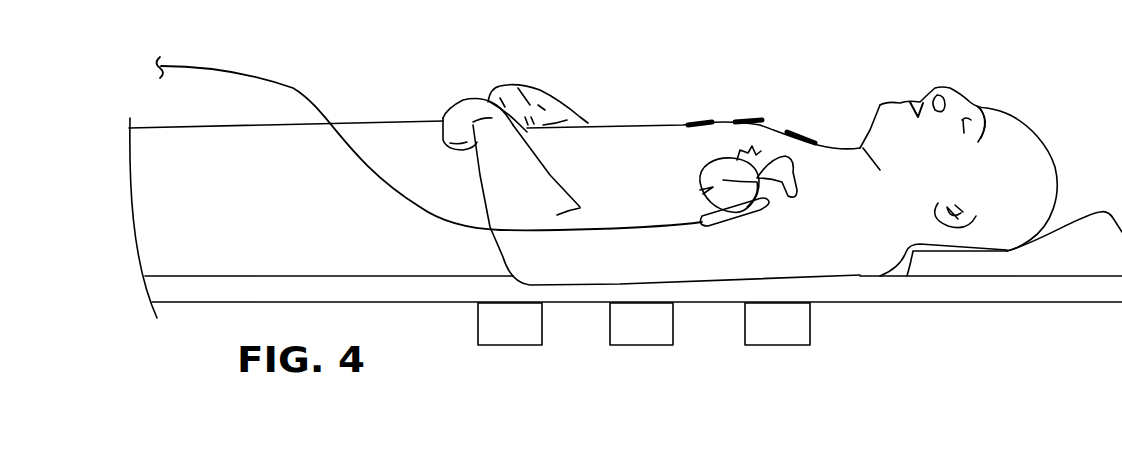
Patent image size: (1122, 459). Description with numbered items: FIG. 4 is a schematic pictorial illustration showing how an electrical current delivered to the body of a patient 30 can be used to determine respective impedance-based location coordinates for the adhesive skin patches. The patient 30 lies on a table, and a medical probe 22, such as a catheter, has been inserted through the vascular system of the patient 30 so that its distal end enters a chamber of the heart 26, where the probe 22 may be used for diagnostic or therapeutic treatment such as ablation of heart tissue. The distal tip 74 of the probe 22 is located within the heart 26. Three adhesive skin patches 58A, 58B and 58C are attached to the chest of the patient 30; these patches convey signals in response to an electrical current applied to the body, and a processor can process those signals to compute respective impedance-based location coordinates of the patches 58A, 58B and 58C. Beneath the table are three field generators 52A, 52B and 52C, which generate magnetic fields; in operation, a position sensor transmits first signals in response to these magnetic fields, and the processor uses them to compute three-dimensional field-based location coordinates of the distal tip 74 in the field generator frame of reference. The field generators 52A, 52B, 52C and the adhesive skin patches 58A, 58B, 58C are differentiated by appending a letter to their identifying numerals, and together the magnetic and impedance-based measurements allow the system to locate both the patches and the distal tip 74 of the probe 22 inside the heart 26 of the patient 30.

The medical probe 22 is at (293, 88).
The heart 26 is at (782, 195).
The patient 30 is at (1023, 147).
The field generator 52A is at (505, 346).
The field generator 52B is at (642, 346).
The field generator 52C is at (782, 346).
The adhesive skin patch 58A is at (703, 121).
The adhesive skin patch 58B is at (753, 118).
The adhesive skin patch 58C is at (809, 131).
The distal tip 74 is at (700, 191).